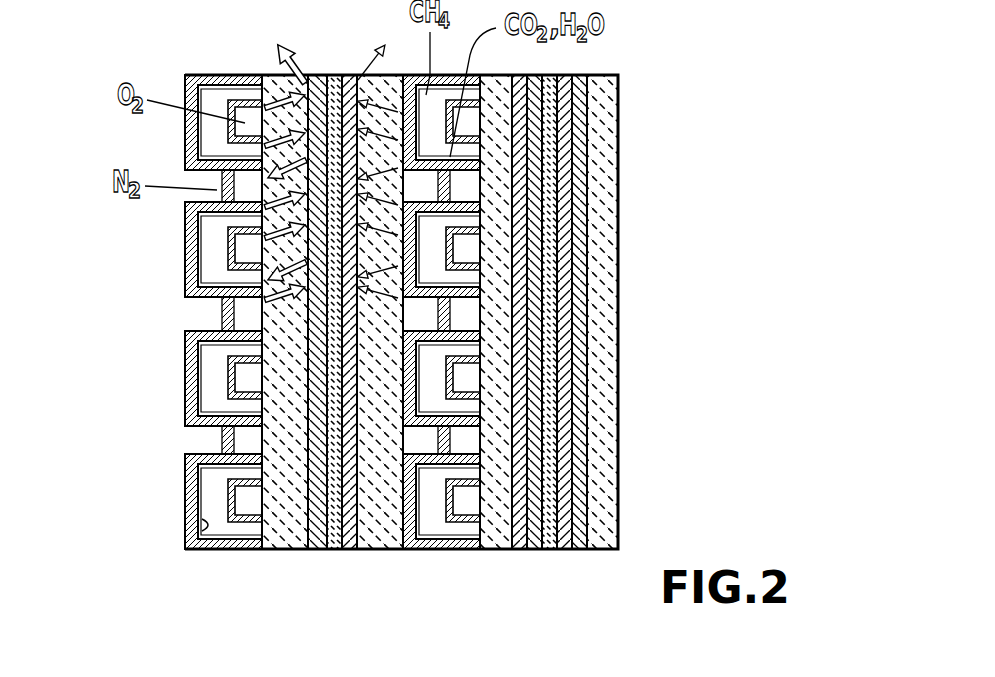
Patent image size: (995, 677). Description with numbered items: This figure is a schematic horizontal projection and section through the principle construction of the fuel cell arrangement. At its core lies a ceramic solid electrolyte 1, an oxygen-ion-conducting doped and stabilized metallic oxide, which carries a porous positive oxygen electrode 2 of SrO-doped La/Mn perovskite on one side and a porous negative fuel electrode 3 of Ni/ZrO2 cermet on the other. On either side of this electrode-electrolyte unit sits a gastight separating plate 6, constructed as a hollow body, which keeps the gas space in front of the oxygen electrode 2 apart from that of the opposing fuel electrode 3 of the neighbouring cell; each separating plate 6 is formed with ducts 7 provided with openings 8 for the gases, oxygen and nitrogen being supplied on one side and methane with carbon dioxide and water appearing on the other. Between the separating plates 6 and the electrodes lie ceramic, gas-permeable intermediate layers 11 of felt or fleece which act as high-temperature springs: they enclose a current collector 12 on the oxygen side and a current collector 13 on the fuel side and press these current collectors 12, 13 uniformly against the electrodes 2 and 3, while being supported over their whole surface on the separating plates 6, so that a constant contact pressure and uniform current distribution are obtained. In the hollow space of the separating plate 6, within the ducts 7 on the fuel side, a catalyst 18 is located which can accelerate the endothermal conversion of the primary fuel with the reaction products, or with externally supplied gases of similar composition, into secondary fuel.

The ceramic solid electrolyte 1 is at (330, 380).
The oxygen electrode 2 is at (313, 322).
The fuel electrode 3 is at (357, 437).
The separating plate 6 is at (190, 283).
The ducts 7 is at (453, 345).
The openings 8 is at (442, 377).
The intermediate layer 11 is at (560, 503).
The current collector on the oxygen side 12 is at (305, 552).
The current collector on the fuel side 13 is at (367, 552).
The catalyst 18 is at (204, 528).